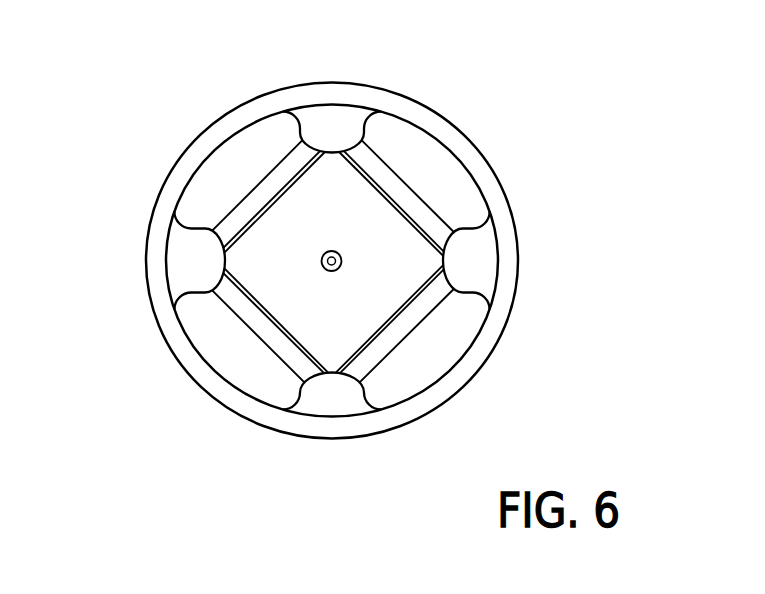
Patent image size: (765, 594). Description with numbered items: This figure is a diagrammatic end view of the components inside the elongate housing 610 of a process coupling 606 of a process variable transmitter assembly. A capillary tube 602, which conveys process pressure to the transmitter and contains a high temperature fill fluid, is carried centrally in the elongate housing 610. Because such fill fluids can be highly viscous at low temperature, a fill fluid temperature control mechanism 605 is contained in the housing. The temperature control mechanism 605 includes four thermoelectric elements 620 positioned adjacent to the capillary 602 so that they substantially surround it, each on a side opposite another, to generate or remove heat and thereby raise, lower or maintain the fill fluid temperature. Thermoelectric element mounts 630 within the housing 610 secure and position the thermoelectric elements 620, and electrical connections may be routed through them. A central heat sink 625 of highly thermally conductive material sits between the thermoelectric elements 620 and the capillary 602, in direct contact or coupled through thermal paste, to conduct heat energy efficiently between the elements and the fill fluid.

The capillary tube 602 is at (341, 253).
The fill fluid temperature control mechanism 605 is at (212, 190).
The process coupling 606 is at (606, 84).
The elongate housing 610 is at (471, 141).
The thermoelectric elements 620 is at (368, 170).
The central heat sink 625 is at (322, 315).
The thermoelectric element mounts 630 is at (321, 134).